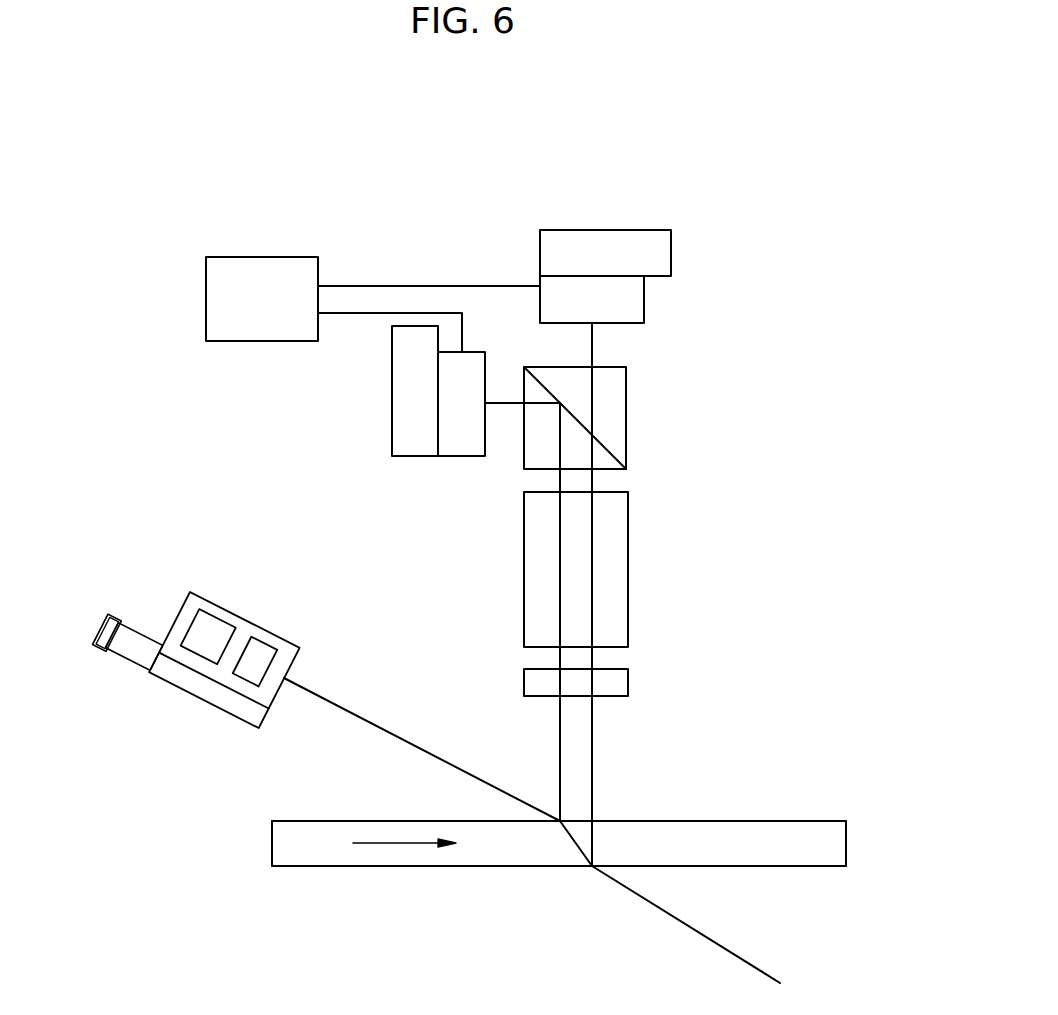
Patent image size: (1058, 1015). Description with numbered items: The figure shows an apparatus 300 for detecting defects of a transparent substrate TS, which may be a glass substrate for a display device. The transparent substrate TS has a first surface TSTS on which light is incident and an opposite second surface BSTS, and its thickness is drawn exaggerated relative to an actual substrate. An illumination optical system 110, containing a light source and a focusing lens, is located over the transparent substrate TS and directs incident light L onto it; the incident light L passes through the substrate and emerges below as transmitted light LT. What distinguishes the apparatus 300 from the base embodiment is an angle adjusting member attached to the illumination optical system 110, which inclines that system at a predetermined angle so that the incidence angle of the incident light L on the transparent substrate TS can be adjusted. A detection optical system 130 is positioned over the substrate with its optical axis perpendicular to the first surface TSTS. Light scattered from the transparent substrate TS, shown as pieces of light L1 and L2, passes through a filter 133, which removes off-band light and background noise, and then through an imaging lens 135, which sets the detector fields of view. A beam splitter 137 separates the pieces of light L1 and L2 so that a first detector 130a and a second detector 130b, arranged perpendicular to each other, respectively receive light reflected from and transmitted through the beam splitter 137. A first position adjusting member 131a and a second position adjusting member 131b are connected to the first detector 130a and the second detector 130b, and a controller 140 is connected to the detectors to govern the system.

The apparatus for detecting defects of the transparent substrate 300 is at (771, 132).
The controller 140 is at (262, 257).
The detection optical system 130 is at (595, 470).
The first position adjusting member 131a is at (408, 456).
The first detector 130a is at (465, 456).
The second position adjusting member 131b is at (671, 252).
The second detector 130b is at (644, 302).
The beam splitter 137 is at (626, 418).
The imaging lens 135 is at (628, 566).
The filter 133 is at (628, 684).
The illumination optical system 110 is at (197, 600).
The incident light L is at (410, 743).
The first piece of scattered light L1 is at (560, 739).
The second piece of scattered light L2 is at (591, 738).
The transmitted light LT is at (573, 845).
The transparent substrate TS is at (846, 843).
The first surface TSTS is at (817, 821).
The second surface BSTS is at (817, 866).